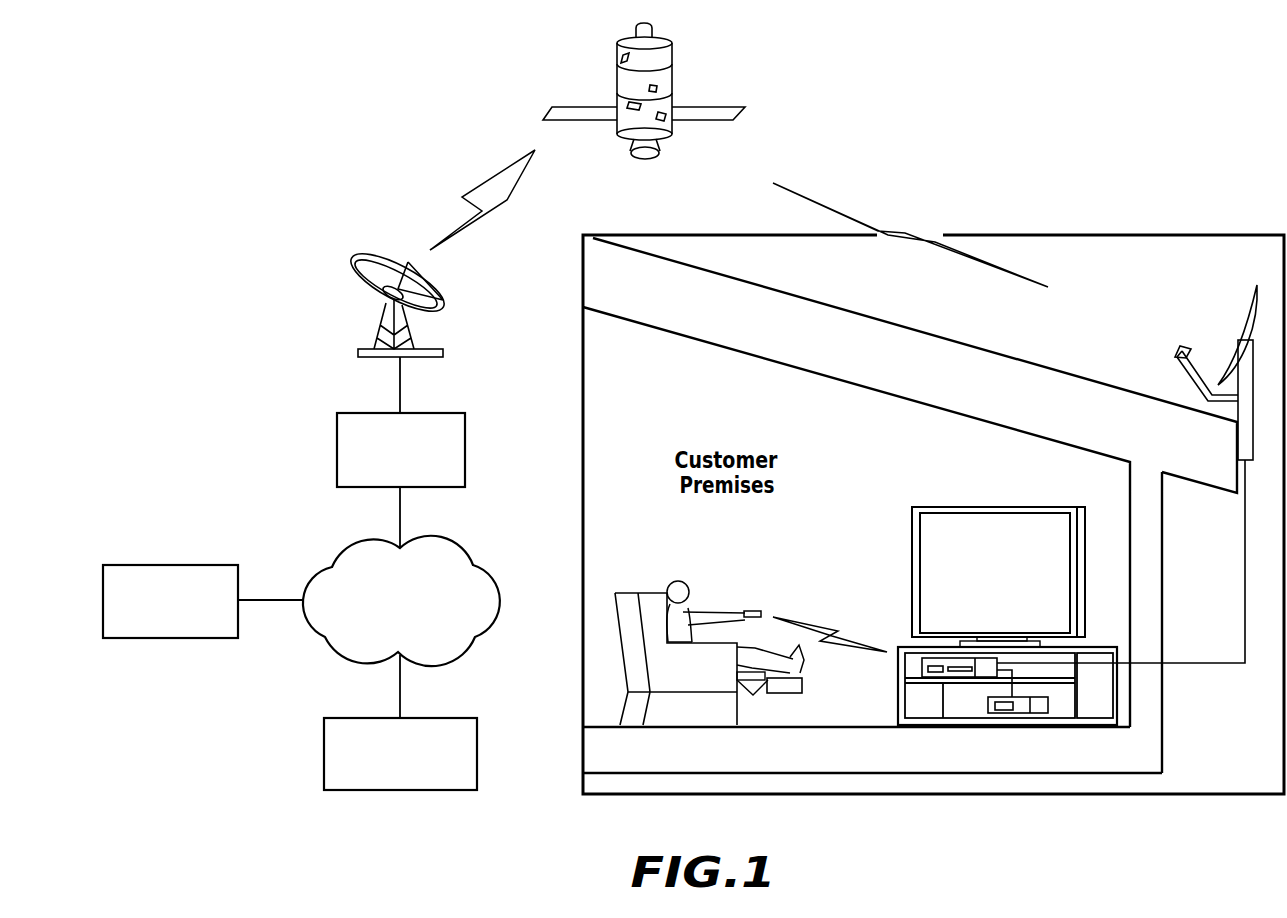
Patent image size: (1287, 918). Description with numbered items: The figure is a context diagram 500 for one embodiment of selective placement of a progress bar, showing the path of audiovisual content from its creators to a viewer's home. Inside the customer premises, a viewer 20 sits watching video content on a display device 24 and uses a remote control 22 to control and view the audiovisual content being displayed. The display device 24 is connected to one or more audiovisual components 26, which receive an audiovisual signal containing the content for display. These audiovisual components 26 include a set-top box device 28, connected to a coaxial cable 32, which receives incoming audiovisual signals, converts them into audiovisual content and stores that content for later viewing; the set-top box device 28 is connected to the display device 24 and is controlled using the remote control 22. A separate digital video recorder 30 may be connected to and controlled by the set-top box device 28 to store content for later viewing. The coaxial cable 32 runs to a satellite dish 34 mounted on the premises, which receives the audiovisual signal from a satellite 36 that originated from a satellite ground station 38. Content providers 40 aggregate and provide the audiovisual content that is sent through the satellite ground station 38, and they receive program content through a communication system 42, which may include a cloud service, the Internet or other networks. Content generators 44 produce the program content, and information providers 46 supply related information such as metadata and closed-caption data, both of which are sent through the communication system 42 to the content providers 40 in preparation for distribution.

The context diagram 500 is at (1191, 118).
The satellite 36 is at (672, 62).
The satellite ground station 38 is at (352, 266).
The content providers 40 is at (337, 436).
The communication system 42 is at (337, 559).
The content generators 44 is at (143, 565).
The information providers 46 is at (368, 790).
The satellite dish 34 is at (1250, 300).
The coaxial cable 32 is at (1245, 558).
The display device 24 is at (950, 507).
The audiovisual components 26 is at (898, 684).
The set-top box device 28 is at (962, 677).
The digital video recorder 30 is at (1024, 713).
The viewer 20 is at (670, 579).
The remote control 22 is at (758, 611).